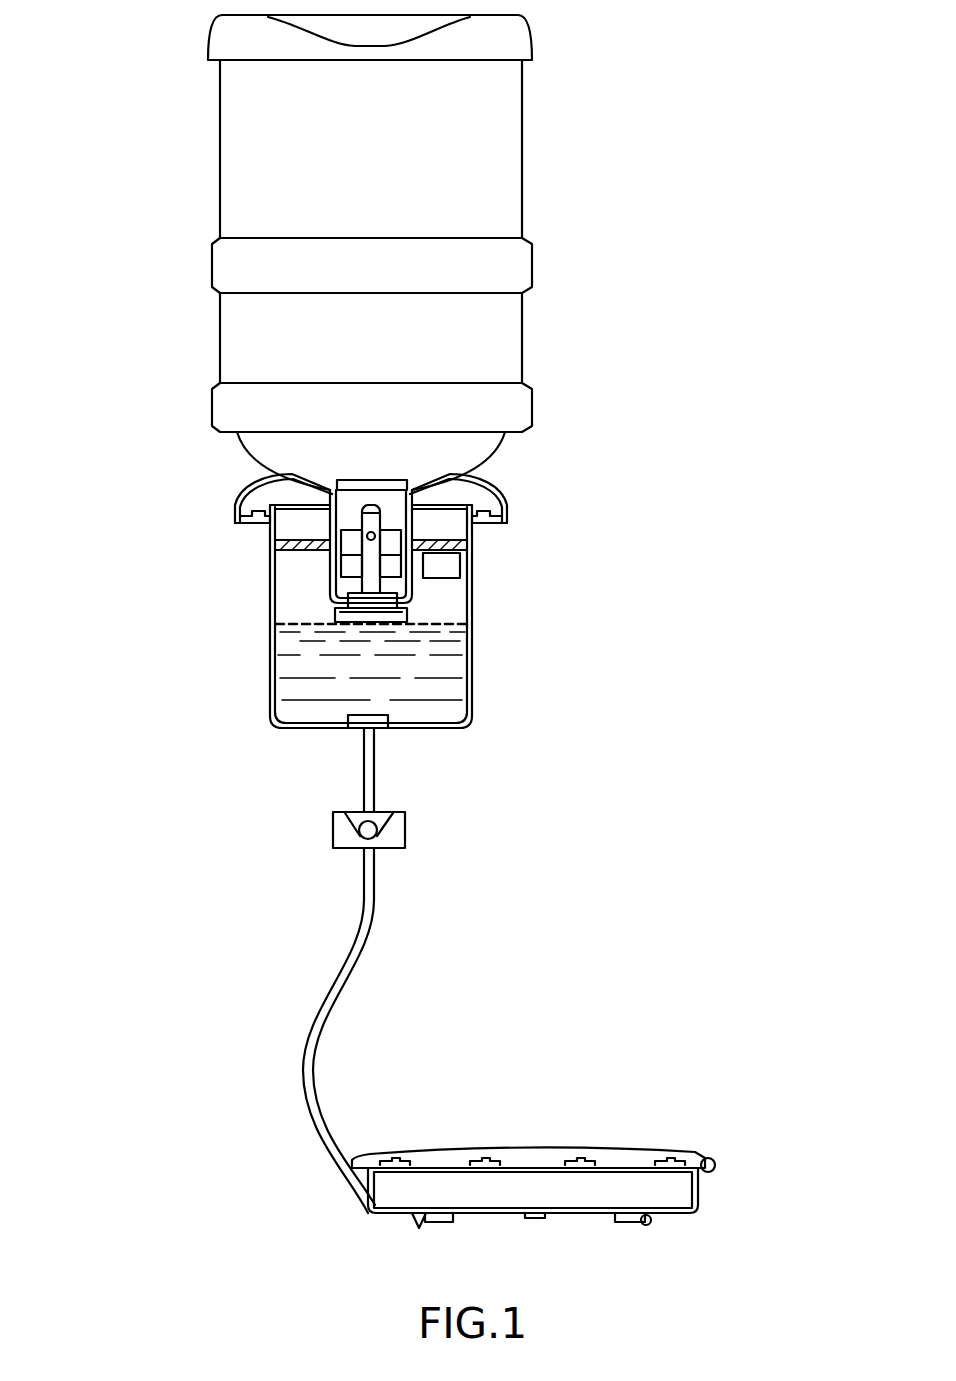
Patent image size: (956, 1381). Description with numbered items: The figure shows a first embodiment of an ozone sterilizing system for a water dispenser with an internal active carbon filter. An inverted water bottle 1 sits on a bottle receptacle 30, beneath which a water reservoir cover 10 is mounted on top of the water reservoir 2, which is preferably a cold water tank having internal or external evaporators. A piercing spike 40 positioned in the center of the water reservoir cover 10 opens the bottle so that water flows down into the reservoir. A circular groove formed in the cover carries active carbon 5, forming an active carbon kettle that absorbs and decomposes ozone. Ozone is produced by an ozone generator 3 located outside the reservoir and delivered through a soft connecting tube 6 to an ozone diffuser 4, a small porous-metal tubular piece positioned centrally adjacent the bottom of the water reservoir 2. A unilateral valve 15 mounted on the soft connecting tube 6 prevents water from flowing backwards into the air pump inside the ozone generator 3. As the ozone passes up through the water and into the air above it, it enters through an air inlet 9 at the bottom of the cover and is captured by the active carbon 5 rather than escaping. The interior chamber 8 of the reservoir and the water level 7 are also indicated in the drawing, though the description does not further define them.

The water bottle 1 is at (265, 127).
The bottle receptacle 30 is at (258, 490).
The piercing spike 40 is at (375, 542).
The water reservoir 2 is at (270, 715).
The active carbon 5 is at (275, 548).
The chamber 8 is at (300, 600).
The air inlet 9 is at (445, 565).
The water reservoir cover 10 is at (410, 597).
The water level 7 is at (305, 633).
The ozone diffuser 4 is at (350, 730).
The unilateral valve 15 is at (337, 832).
The soft connecting tube 6 is at (305, 1073).
The ozone generator 3 is at (370, 1212).